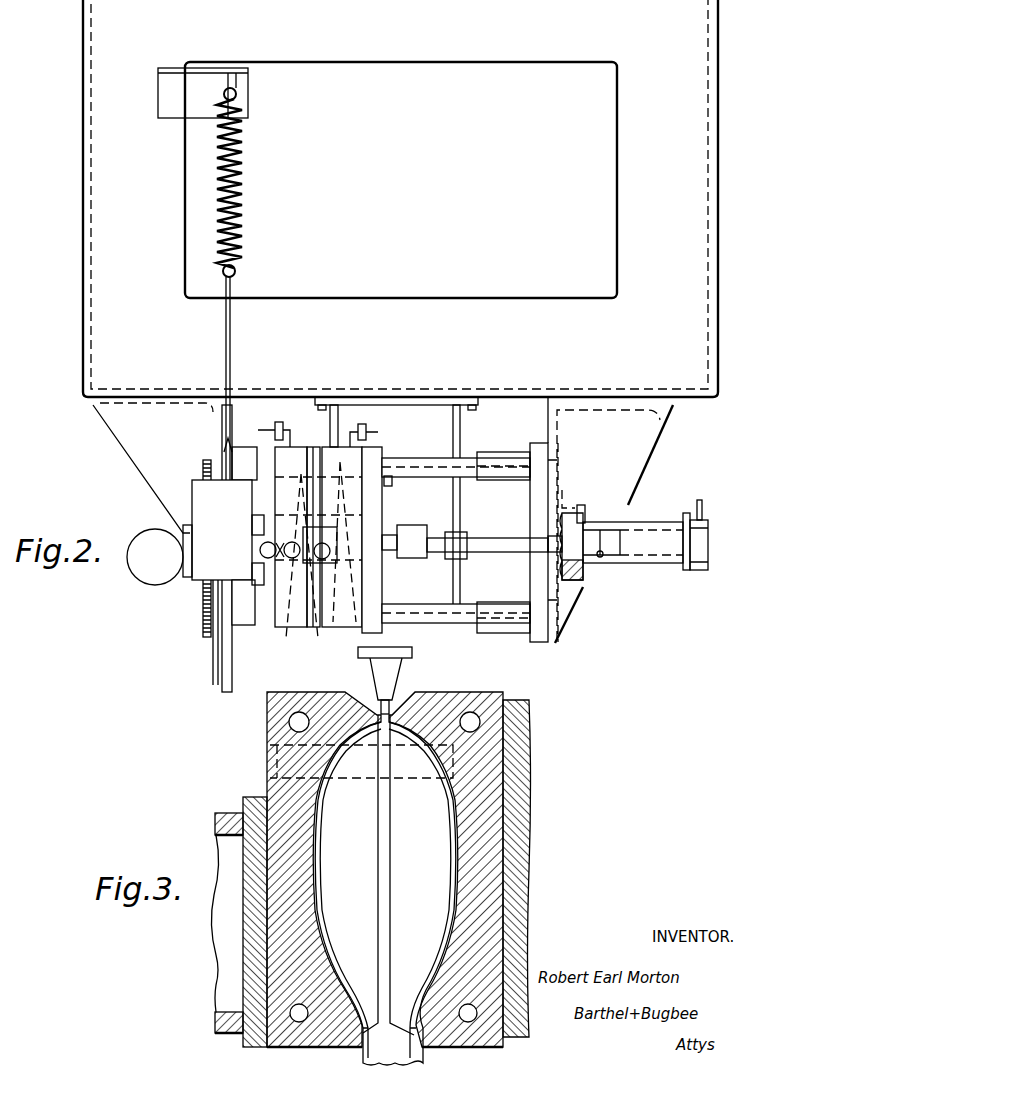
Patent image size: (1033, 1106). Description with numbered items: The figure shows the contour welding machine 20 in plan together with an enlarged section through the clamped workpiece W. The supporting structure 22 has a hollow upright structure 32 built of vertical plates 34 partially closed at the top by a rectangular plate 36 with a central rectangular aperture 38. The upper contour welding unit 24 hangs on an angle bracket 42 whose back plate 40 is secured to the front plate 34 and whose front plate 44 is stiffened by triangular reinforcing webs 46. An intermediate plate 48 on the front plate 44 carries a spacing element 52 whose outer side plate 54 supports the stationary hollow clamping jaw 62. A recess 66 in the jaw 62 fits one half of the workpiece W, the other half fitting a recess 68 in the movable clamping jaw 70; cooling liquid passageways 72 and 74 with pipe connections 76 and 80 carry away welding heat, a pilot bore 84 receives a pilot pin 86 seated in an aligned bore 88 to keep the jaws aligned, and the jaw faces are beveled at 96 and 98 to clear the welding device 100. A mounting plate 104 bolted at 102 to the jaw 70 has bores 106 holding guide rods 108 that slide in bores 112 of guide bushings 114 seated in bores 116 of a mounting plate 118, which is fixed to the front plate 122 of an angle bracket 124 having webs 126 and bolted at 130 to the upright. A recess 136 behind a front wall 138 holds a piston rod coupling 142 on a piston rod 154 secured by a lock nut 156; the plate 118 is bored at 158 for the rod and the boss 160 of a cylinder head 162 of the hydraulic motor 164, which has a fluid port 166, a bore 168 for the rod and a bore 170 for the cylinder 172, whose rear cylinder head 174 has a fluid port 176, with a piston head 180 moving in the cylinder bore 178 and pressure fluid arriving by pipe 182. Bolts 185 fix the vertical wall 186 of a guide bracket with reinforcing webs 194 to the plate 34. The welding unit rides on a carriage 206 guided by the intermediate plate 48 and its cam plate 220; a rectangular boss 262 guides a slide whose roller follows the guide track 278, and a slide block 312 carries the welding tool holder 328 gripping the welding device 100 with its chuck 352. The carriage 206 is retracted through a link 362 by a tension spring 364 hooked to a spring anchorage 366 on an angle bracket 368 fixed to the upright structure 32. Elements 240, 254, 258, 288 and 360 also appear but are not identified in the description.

In FIG. 2, the contour welding machine 20 is at (729, 102).
In FIG. 2, the supporting structure 22 is at (727, 361).
In FIG. 2, the upper contour welding unit 24 is at (184, 605).
In FIG. 2, the upright structure 32 is at (76, 136).
In FIG. 2, the vertical plates 34 is at (91, 258).
In FIG. 2, the rectangular plate 36 is at (422, 62).
In FIG. 2, the rectangular aperture 38 is at (490, 64).
In FIG. 2, the back plate 40 is at (104, 404).
In FIG. 2, the angle bracket 42 is at (130, 434).
In FIG. 2, the front plate 44 is at (205, 404).
In FIG. 2, the triangular reinforcing webs 46 is at (148, 462).
In FIG. 3, the triangular reinforcing webs 46 is at (214, 828).
In FIG. 2, the intermediate plate 48 is at (233, 442).
In FIG. 3, the spacing element 52 is at (223, 806).
In FIG. 2, the outer side plate 54 is at (278, 590).
In FIG. 3, the outer side plate 54 is at (268, 792).
In FIG. 2, the stationary hollow clamping jaw 62 is at (323, 684).
In FIG. 2, the recess 66 is at (288, 628).
In FIG. 3, the recess 66 is at (318, 870).
In FIG. 2, the recess 68 is at (346, 576).
In FIG. 3, the recess 68 is at (456, 855).
In FIG. 2, the movable clamping jaw 70 is at (474, 678).
In FIG. 3, the cooling liquid passageway 72 is at (290, 722).
In FIG. 3, the cooling liquid passageway 74 is at (480, 722).
In FIG. 2, the upper pipe connection 76 is at (274, 430).
In FIG. 2, the upper pipe connection 80 is at (352, 432).
In FIG. 3, the pilot bore 84 is at (270, 754).
In FIG. 3, the pilot pin 86 is at (344, 774).
In FIG. 3, the aligned bore 88 is at (418, 774).
In FIG. 2, the bevel 96 is at (310, 628).
In FIG. 2, the bevel 98 is at (342, 628).
In FIG. 2, the welding device 100 is at (419, 665).
In FIG. 2, the bolts 102 is at (388, 480).
In FIG. 2, the mounting plate 104 is at (384, 460).
In FIG. 3, the mounting plate 104 is at (518, 766).
In FIG. 2, the bores 106 is at (384, 626).
In FIG. 2, the guide rods 108 is at (436, 462).
In FIG. 2, the bores 112 is at (502, 455).
In FIG. 2, the guide bushings 114 is at (484, 452).
In FIG. 2, the bores 116 is at (556, 428).
In FIG. 2, the mounting plate 118 is at (538, 646).
In FIG. 2, the front plate 122 is at (572, 620).
In FIG. 2, the angle bracket 124 is at (612, 420).
In FIG. 2, the triangular webs 126 is at (648, 460).
In FIG. 2, the bolts 130 is at (580, 600).
In FIG. 2, the recess 136 is at (394, 536).
In FIG. 2, the front wall 138 is at (414, 558).
In FIG. 2, the piston rod coupling 142 is at (418, 521).
In FIG. 2, the piston rod 154 is at (448, 538).
In FIG. 2, the lock nut 156 is at (440, 560).
In FIG. 2, the bore 158 is at (548, 522).
In FIG. 2, the boss 160 is at (548, 546).
In FIG. 2, the cylinder head 162 is at (576, 578).
In FIG. 2, the reciprocatory hydraulic motor 164 is at (654, 518).
In FIG. 2, the fluid port 166 is at (562, 518).
In FIG. 2, the bore 168 is at (562, 556).
In FIG. 2, the bore 170 is at (584, 510).
In FIG. 2, the cylinder 172 is at (604, 556).
In FIG. 2, the cylinder head 174 is at (708, 548).
In FIG. 2, the fluid port 176 is at (706, 516).
In FIG. 2, the cylinder bore 178 is at (612, 524).
In FIG. 2, the piston head 180 is at (590, 560).
In FIG. 2, the pipe 182 is at (574, 486).
In FIG. 2, the bolts 185 is at (492, 404).
In FIG. 2, the vertical wall 186 is at (426, 404).
In FIG. 2, the triangular reinforcing webs 194 is at (348, 404).
In FIG. 2, the carriage 206 is at (192, 492).
In FIG. 2, the cam plate 220 is at (221, 446).
In FIG. 2, the motor 240 is at (130, 566).
In FIG. 2, the rack 254 is at (206, 624).
In FIG. 2, the rod 258 is at (214, 650).
In FIG. 2, the rectangular boss 262 is at (256, 528).
In FIG. 2, the guide track 278 is at (242, 626).
In FIG. 2, the gears 288 is at (260, 546).
In FIG. 2, the slide block 312 is at (292, 526).
In FIG. 2, the welding tool holder 328 is at (320, 545).
In FIG. 2, the chuck 352 is at (385, 680).
In FIG. 2, the arrow 360 is at (233, 472).
In FIG. 2, the link 362 is at (232, 358).
In FIG. 2, the tension spring 364 is at (244, 220).
In FIG. 2, the spring anchorage 366 is at (250, 88).
In FIG. 2, the angle bracket 368 is at (158, 102).
In FIG. 3, the workpiece W is at (428, 1052).